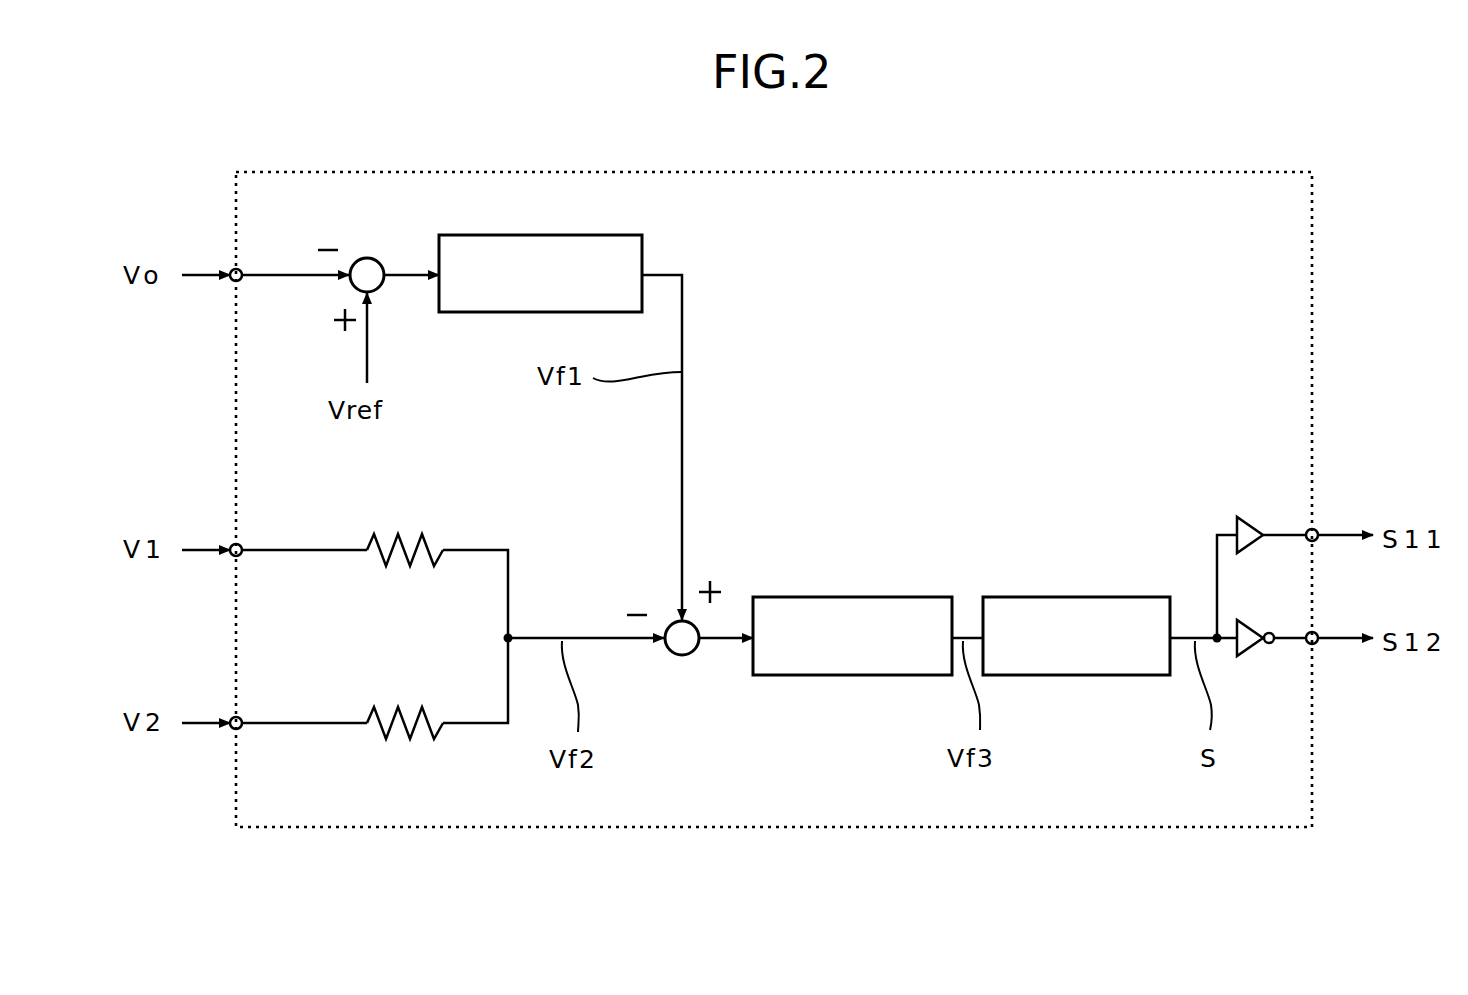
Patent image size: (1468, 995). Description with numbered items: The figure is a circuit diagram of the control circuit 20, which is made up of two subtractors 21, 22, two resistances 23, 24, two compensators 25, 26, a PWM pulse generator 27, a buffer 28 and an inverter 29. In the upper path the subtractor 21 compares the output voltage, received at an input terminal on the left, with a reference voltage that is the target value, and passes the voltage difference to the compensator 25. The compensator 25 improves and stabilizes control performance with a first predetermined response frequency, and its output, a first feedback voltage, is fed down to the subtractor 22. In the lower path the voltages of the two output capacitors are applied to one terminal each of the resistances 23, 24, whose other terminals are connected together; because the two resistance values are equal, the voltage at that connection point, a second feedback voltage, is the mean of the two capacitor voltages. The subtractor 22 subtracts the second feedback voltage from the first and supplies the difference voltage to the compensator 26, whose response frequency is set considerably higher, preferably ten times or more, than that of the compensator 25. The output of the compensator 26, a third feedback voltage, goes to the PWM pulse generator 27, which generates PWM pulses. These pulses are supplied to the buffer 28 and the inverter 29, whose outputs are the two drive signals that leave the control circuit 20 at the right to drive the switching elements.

The control circuit 20 is at (1102, 172).
The subtractor 21 is at (371, 265).
The subtractor 22 is at (678, 643).
The resistance 23 is at (388, 542).
The resistance 24 is at (388, 713).
The compensator 25 is at (527, 235).
The compensator 26 is at (853, 597).
The PWM pulse generator 27 is at (1015, 597).
The buffer 28 is at (1250, 523).
The inverter 29 is at (1250, 627).